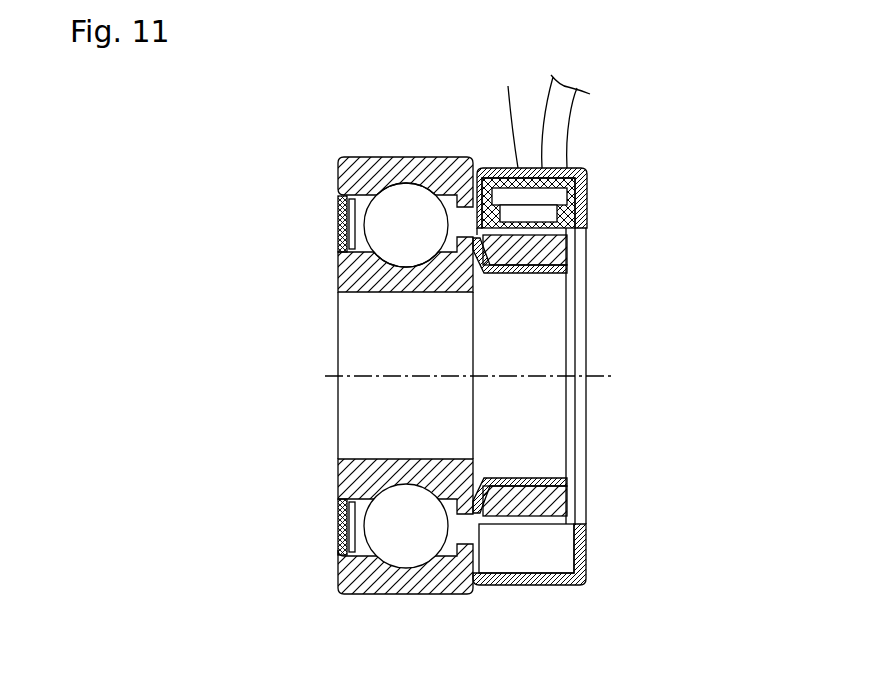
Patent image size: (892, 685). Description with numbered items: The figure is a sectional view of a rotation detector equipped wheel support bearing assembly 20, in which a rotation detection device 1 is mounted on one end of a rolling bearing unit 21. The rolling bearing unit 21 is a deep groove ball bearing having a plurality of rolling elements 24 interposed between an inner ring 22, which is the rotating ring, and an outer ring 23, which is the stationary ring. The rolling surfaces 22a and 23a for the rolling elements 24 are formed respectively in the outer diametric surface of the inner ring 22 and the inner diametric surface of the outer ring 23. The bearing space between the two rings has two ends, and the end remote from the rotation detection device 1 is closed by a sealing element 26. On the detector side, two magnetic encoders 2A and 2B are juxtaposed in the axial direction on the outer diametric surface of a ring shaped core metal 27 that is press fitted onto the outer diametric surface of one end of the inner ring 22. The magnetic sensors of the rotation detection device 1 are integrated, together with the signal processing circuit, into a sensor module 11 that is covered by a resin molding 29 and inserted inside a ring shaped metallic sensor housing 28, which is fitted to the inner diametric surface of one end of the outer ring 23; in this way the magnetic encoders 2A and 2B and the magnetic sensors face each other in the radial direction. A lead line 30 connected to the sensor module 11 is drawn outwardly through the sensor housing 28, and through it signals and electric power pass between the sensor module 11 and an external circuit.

The rotation detector equipped wheel support bearing assembly 20 is at (282, 143).
The rolling bearing unit 21 is at (337, 155).
The inner ring 22 is at (365, 270).
The rolling surface 22a is at (355, 269).
The outer ring 23 is at (406, 157).
The rolling surface 23a is at (422, 190).
The rolling elements 24 is at (387, 210).
The sealing element 26 is at (340, 223).
The core metal 27 is at (493, 275).
The sensor housing 28 is at (506, 113).
The resin molding 29 is at (583, 174).
The lead line 30 is at (557, 125).
The rotation detection device 1 is at (673, 193).
The sensor module 11 is at (577, 202).
The magnetic encoder 2A is at (560, 252).
The magnetic encoder 2B is at (540, 273).